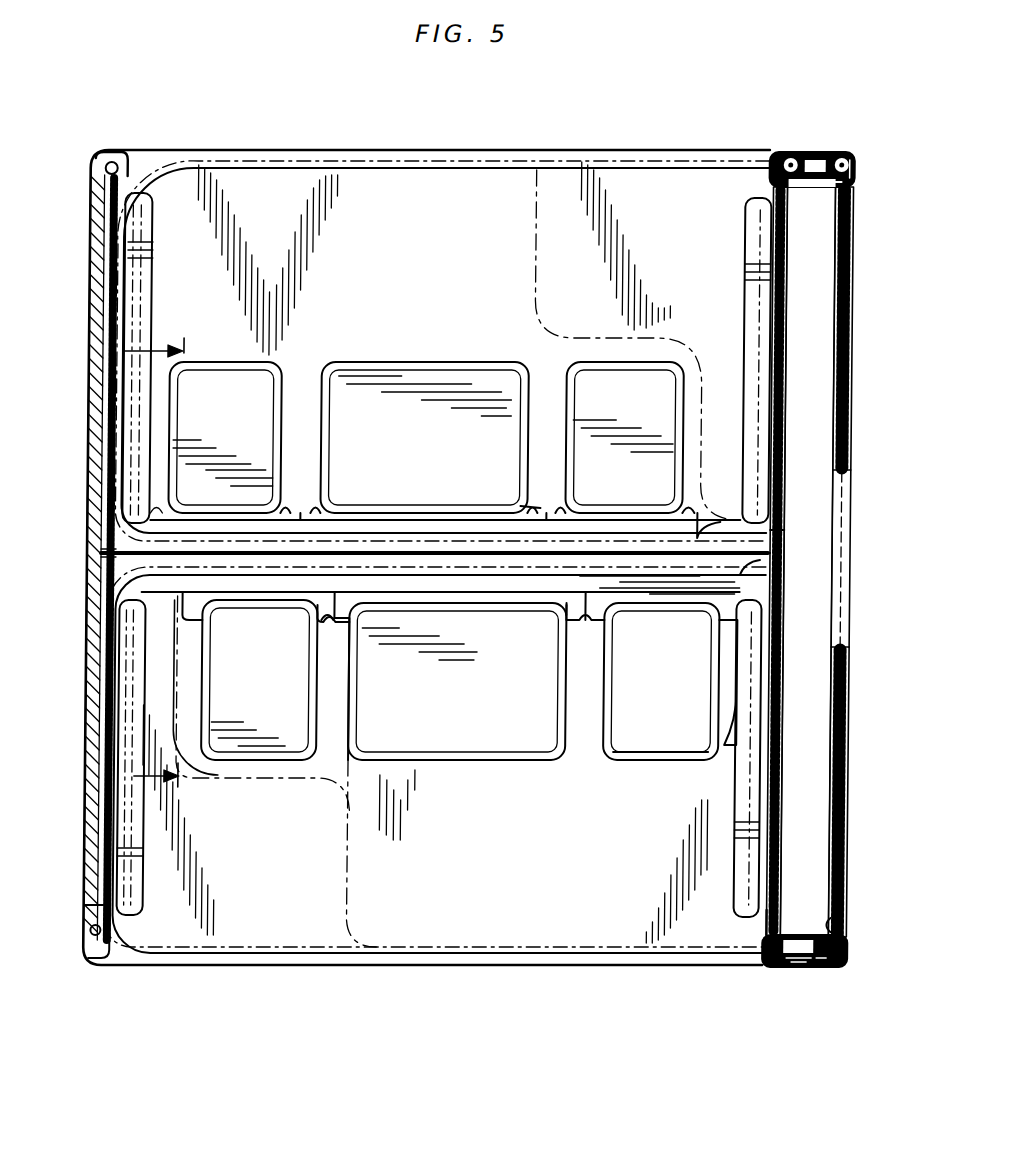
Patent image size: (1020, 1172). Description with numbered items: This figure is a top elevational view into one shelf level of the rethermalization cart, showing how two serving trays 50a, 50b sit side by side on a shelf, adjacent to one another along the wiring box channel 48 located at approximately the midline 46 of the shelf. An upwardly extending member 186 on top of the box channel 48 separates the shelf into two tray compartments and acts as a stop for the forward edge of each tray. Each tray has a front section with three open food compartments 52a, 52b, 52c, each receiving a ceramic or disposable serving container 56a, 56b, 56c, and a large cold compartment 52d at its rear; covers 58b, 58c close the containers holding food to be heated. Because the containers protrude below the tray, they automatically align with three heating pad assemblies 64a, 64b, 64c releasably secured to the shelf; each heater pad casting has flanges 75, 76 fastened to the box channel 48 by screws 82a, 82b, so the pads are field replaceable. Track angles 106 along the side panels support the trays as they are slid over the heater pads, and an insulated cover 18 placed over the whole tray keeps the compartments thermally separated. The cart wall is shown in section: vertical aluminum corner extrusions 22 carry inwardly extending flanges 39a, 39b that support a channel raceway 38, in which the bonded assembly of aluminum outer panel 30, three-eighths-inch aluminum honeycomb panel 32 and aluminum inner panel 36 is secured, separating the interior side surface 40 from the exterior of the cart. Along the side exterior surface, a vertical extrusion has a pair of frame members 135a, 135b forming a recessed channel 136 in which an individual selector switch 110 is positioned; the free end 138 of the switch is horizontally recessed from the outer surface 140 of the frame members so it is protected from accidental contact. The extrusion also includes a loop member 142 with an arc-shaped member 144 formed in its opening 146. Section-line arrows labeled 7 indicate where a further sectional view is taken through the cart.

The section line 7- 7 is at (161, 573).
The insulated cover 18 is at (364, 960).
The corner extrusion 22 is at (810, 968).
The aluminum outer panel 30 is at (851, 275).
The aluminum honeycomb panel 32 is at (851, 362).
The aluminum inner panel 36 is at (770, 283).
The channel raceway 38 is at (826, 664).
The inwardly extending flange 39a is at (782, 915).
The inwardly extending flange 39b is at (834, 918).
The interior side surface 40 is at (757, 838).
The midline 46 is at (766, 573).
The wiring box channel 48 is at (108, 567).
The tray 50a is at (584, 150).
The tray 50b is at (447, 962).
The food compartment 52a is at (256, 757).
The food compartment 52b is at (512, 762).
The food compartment 52c is at (642, 765).
The cold compartment 52d is at (292, 916).
The serving container 56a is at (198, 670).
The serving container 56b is at (362, 680).
The serving container 56c is at (612, 660).
The cover 58b is at (405, 805).
The cover 58c is at (614, 702).
The heating pad assembly 64a is at (318, 800).
The heating pad assembly 64b is at (568, 700).
The heating pad assembly 64c is at (718, 752).
The flange 75 is at (568, 512).
The flanged end 76 is at (700, 512).
The screw 82a is at (310, 495).
The screw 82b is at (526, 495).
The track angle 106 is at (142, 251).
The individual selector switch 110 is at (811, 158).
The frame member 135a is at (802, 968).
The frame member 135b is at (832, 966).
The recessed channel 136 is at (808, 968).
The free end 138 is at (810, 158).
The outer surface 140 is at (785, 155).
The loop member 142 is at (849, 160).
The arc-shaped member 144 is at (774, 165).
The opening 146 is at (843, 156).
The upwardly extending member 186 is at (784, 536).